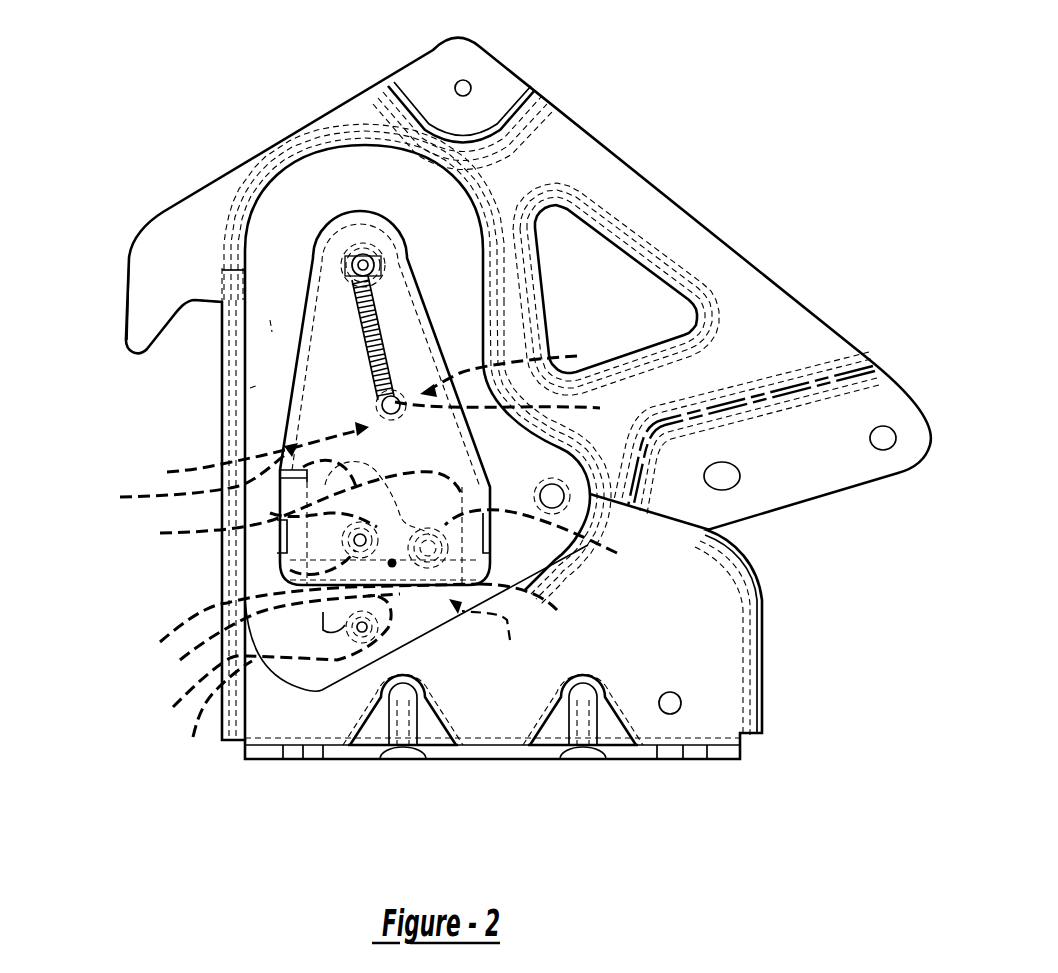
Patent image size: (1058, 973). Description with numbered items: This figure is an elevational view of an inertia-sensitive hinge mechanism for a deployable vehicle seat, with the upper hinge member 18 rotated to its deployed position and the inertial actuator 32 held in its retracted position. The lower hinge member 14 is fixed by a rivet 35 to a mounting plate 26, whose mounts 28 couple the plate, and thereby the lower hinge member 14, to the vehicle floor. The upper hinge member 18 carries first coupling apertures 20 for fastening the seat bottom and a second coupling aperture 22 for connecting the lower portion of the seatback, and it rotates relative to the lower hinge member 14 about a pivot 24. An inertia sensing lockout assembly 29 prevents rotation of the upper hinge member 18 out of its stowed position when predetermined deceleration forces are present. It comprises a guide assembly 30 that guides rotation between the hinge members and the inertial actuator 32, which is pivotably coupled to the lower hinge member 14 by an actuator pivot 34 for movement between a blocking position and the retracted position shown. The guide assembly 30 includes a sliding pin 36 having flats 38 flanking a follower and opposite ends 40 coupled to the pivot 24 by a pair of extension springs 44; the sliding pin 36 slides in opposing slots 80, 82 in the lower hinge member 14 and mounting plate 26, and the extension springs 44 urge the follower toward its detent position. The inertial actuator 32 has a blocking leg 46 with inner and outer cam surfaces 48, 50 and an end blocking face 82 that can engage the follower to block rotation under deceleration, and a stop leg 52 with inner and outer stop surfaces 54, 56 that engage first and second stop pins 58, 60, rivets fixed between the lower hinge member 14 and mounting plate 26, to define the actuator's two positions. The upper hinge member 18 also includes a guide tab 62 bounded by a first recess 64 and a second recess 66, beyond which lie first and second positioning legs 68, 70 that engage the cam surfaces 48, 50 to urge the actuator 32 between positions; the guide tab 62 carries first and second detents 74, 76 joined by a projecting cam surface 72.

The lower hinge member 14 is at (222, 552).
The upper hinge member 18 is at (703, 229).
The first coupling apertures 20 is at (740, 472).
The second coupling aperture 22 is at (467, 80).
The pivot 24 is at (363, 265).
The mounting plate 26 is at (710, 647).
The mounts 28 is at (425, 735).
The inertia sensing lockout assembly 29 is at (359, 420).
The guide assembly 30 is at (193, 476).
The inertial actuator 32 is at (482, 632).
The actuator pivot 34 is at (524, 610).
The rivet 35 is at (590, 512).
The sliding pin 36 is at (511, 410).
The flats 38 is at (370, 283).
The opposite ends 40 is at (405, 350).
The extension springs 44 is at (383, 330).
The blocking leg 46 is at (292, 548).
The inner cam surface 48 is at (334, 548).
The outer cam surface 50 is at (437, 552).
The stop leg 52 is at (270, 657).
The inner stop surface 54 is at (278, 636).
The outer stop surface 56 is at (322, 690).
The first stop pin 58 is at (308, 617).
The second stop pin 60 is at (215, 714).
The guide tab 62 is at (250, 388).
The first recess 64 is at (208, 304).
The second recess 66 is at (573, 355).
The first positioning leg 68 is at (140, 315).
The second positioning leg 70 is at (543, 542).
The projecting cam surface 72 is at (247, 385).
The first detent 74 is at (270, 320).
The second detent 76 is at (370, 400).
The slot 80 is at (393, 565).
The blocking face 82 is at (295, 503).